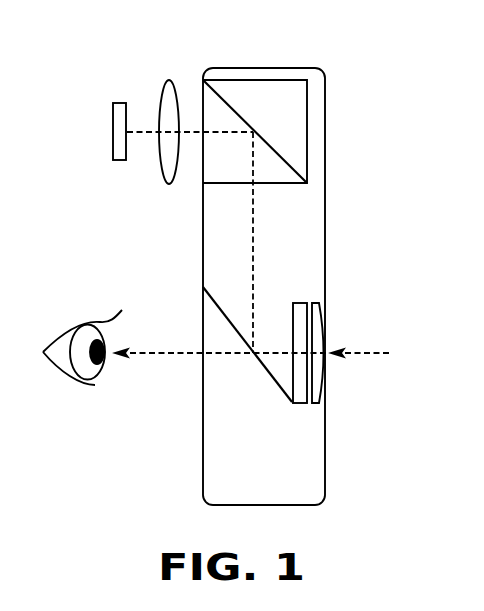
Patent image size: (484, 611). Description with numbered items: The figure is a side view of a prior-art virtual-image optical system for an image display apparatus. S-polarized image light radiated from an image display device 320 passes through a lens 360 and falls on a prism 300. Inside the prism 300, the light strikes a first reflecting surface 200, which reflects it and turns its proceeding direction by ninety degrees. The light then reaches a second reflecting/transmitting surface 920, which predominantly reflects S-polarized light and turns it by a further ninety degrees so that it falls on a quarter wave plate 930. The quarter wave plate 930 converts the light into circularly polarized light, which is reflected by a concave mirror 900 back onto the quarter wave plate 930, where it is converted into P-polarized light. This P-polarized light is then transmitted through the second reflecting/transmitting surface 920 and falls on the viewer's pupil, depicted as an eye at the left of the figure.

The first reflecting surface 200 is at (223, 100).
The prism 300 is at (298, 206).
The image display device 320 is at (122, 102).
The lens 360 is at (168, 81).
The concave mirror 900 is at (320, 310).
The second reflecting/transmitting surface 920 is at (265, 367).
The quarter wave plate 930 is at (298, 302).